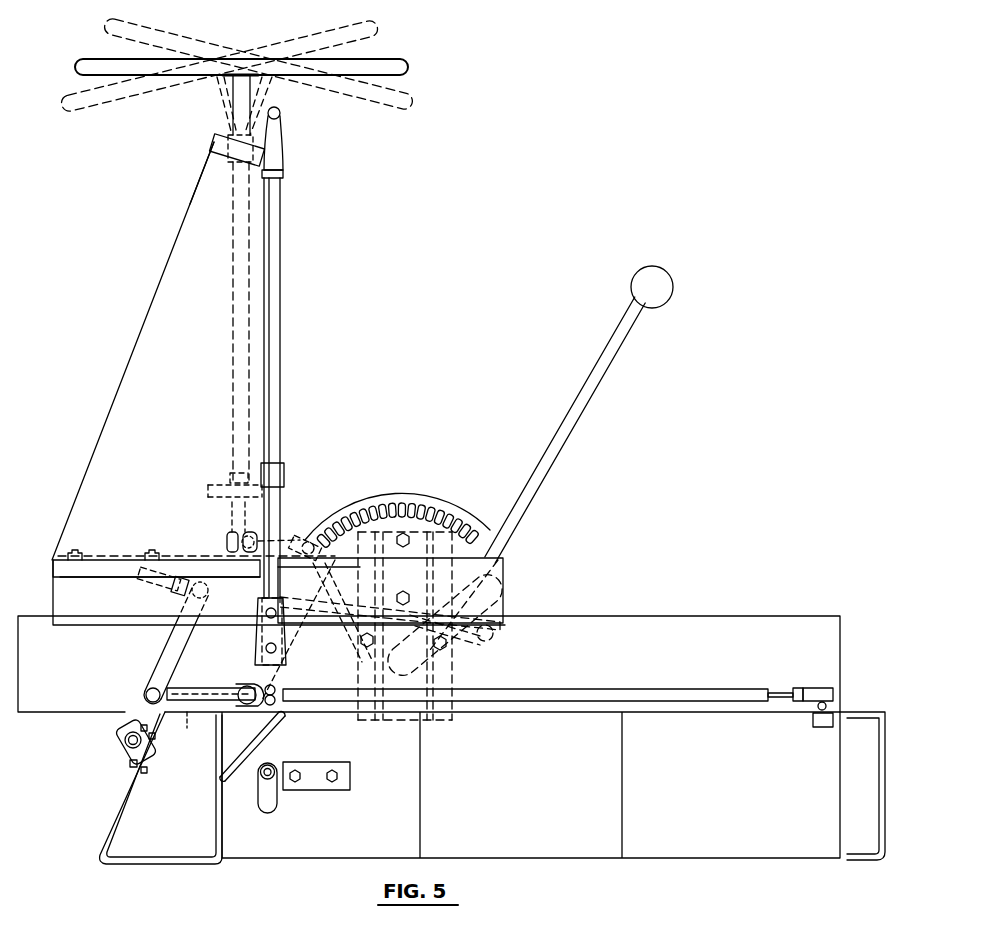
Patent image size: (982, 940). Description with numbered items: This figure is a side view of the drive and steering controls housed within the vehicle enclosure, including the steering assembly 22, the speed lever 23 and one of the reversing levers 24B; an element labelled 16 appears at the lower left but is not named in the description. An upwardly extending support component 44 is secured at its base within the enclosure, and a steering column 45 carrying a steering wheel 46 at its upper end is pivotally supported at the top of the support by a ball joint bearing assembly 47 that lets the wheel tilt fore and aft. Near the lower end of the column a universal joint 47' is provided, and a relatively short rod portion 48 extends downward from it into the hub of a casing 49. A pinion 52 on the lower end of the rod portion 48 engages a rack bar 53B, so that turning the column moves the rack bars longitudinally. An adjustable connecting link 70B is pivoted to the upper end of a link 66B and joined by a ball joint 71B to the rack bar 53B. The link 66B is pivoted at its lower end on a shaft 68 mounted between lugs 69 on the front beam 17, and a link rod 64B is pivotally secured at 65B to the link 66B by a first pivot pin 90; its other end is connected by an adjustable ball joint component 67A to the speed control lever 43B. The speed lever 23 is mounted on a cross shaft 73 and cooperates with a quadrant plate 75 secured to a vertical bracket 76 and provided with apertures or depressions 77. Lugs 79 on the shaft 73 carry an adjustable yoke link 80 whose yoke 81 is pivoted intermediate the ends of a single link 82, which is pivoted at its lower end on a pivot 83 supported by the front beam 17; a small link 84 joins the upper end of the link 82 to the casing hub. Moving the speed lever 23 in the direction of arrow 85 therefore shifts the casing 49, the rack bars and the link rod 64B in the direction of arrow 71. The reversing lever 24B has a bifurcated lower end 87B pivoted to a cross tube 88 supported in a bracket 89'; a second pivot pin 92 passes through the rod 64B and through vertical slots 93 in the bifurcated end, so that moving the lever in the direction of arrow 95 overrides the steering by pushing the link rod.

The frame 16 is at (24, 702).
The front beam assembly 17 is at (113, 831).
The steering assembly 22 is at (140, 227).
The speed lever 23 is at (576, 413).
The reversing lever 24B is at (278, 343).
The speed control lever 43B is at (813, 714).
The support component 44 is at (136, 348).
The steering column 45 is at (243, 116).
The steering wheel 46 is at (380, 60).
The ball joint bearing assembly 47 is at (214, 155).
The universal joint 47' is at (217, 329).
The rod portion of steering column 48 is at (230, 525).
The casing 49 is at (226, 543).
The pinion 52 is at (229, 593).
The rack bar 53B is at (117, 546).
The link rod 64B is at (637, 698).
The pivotal connection 65B is at (145, 691).
The link 66B is at (170, 640).
The adjustable ball joint component 67A is at (824, 688).
The shaft 68 is at (123, 743).
The lugs 69 is at (128, 765).
The adjustable connecting link 70B is at (183, 590).
The arrow 71 is at (607, 733).
The ball joint 71B is at (137, 574).
The cross shaft 73 is at (400, 673).
The quadrant plate 75 is at (457, 556).
The vertical bracket 76 is at (433, 687).
The apertures or depressions 77 is at (417, 515).
The lugs or links 79 is at (484, 648).
The adjustable yoke link 80 is at (406, 590).
The yoke 81 is at (310, 618).
The single link 82 is at (277, 650).
The pivot 83 is at (244, 686).
The small link 84 is at (284, 544).
The arrow 85 is at (590, 322).
The bifurcated lower end 87B is at (282, 721).
The cross bar or tube 88 is at (262, 781).
The bracket 89' is at (340, 776).
The first pivot pin 90 is at (175, 689).
The second pivot pin 92 is at (275, 692).
The vertical slots 93 is at (213, 716).
The arrow 95 is at (355, 282).